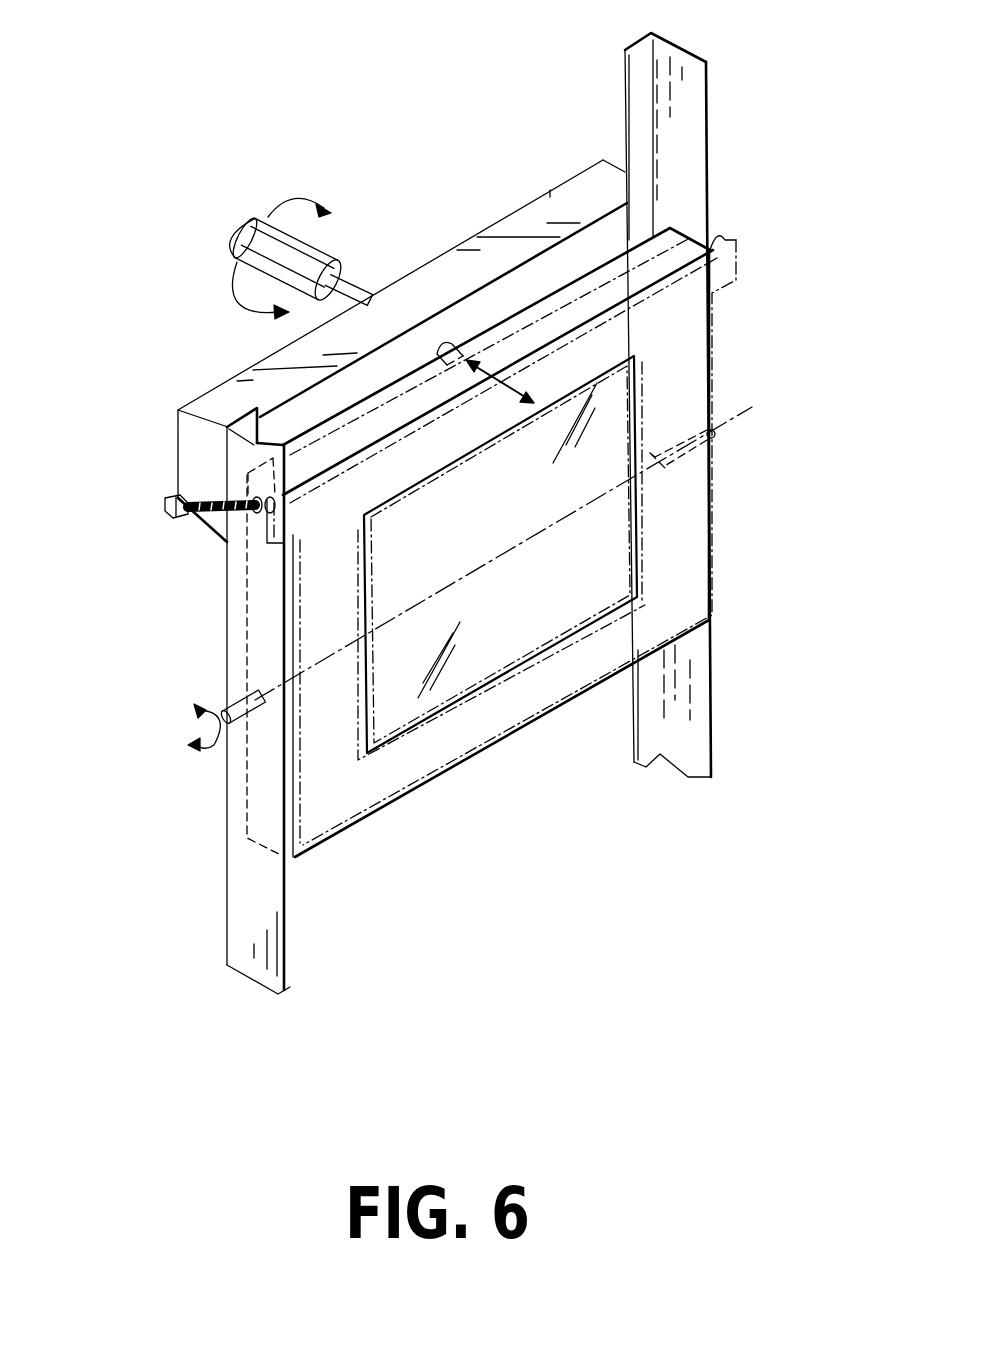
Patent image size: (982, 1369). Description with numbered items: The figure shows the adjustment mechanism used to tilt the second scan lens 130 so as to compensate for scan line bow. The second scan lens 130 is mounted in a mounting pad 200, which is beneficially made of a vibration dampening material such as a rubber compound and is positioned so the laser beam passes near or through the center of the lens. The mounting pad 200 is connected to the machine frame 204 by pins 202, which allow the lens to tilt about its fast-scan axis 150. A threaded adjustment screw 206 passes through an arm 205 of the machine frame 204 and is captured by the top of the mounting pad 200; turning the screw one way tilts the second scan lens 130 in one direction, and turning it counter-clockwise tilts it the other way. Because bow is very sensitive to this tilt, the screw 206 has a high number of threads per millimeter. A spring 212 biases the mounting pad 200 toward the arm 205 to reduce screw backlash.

The second scan lens 130 is at (477, 671).
The fast-scan axis 150 is at (752, 407).
The mounting pad 200 is at (670, 228).
The pins 202 is at (715, 433).
The machine frame 204 is at (680, 50).
The arm 205 is at (557, 202).
The threaded adjustment screw 206 is at (315, 250).
The spring 212 is at (240, 506).